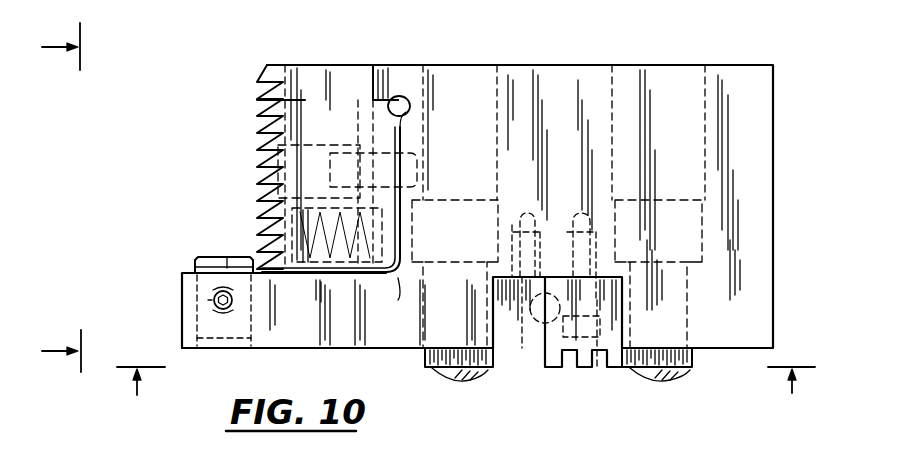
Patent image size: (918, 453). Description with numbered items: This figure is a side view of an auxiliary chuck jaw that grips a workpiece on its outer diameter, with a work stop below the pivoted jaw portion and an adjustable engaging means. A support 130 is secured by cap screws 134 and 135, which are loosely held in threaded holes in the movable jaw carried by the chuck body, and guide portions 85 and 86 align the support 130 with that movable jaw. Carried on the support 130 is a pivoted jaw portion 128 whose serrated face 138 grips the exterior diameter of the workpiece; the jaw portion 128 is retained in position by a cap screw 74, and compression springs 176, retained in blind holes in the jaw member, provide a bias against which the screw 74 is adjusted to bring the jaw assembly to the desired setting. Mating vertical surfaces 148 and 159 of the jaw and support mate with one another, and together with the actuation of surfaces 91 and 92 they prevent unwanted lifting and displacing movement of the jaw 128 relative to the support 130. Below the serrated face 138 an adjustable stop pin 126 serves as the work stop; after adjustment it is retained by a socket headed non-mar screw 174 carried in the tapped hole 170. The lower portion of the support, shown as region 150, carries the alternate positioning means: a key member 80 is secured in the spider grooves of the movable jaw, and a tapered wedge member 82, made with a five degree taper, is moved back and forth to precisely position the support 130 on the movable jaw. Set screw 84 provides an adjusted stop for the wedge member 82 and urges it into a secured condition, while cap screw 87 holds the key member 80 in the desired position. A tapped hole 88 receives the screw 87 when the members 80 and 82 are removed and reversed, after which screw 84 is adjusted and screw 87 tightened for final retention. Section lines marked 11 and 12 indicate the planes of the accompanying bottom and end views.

The support 130 is at (755, 156).
The pivoted jaw portion 128 is at (258, 100).
The serrated face 138 is at (258, 127).
The mating vertical surface 148 is at (372, 80).
The surface 92 is at (386, 100).
The surface 91 is at (410, 110).
The cap screw 74 is at (350, 143).
The cap screw 134 is at (460, 200).
The cap screw 135 is at (667, 200).
The guide portion 85 is at (427, 367).
The guide portion 86 is at (690, 368).
The tapped hole 88 is at (513, 225).
The set screw 84 is at (548, 294).
The key member 80 is at (560, 368).
The tapered wedge member 82 is at (535, 345).
The cap screw 87 is at (598, 370).
The flange 150 is at (302, 335).
The springs 176 is at (324, 293).
The mating vertical surface 159 is at (398, 288).
The adjustable stop pin 126 is at (227, 258).
The tapped hole 170 is at (210, 300).
The non-mar screw 174 is at (232, 312).
The section line 12- 12 is at (56, 197).
The section line 11- 11 is at (466, 384).